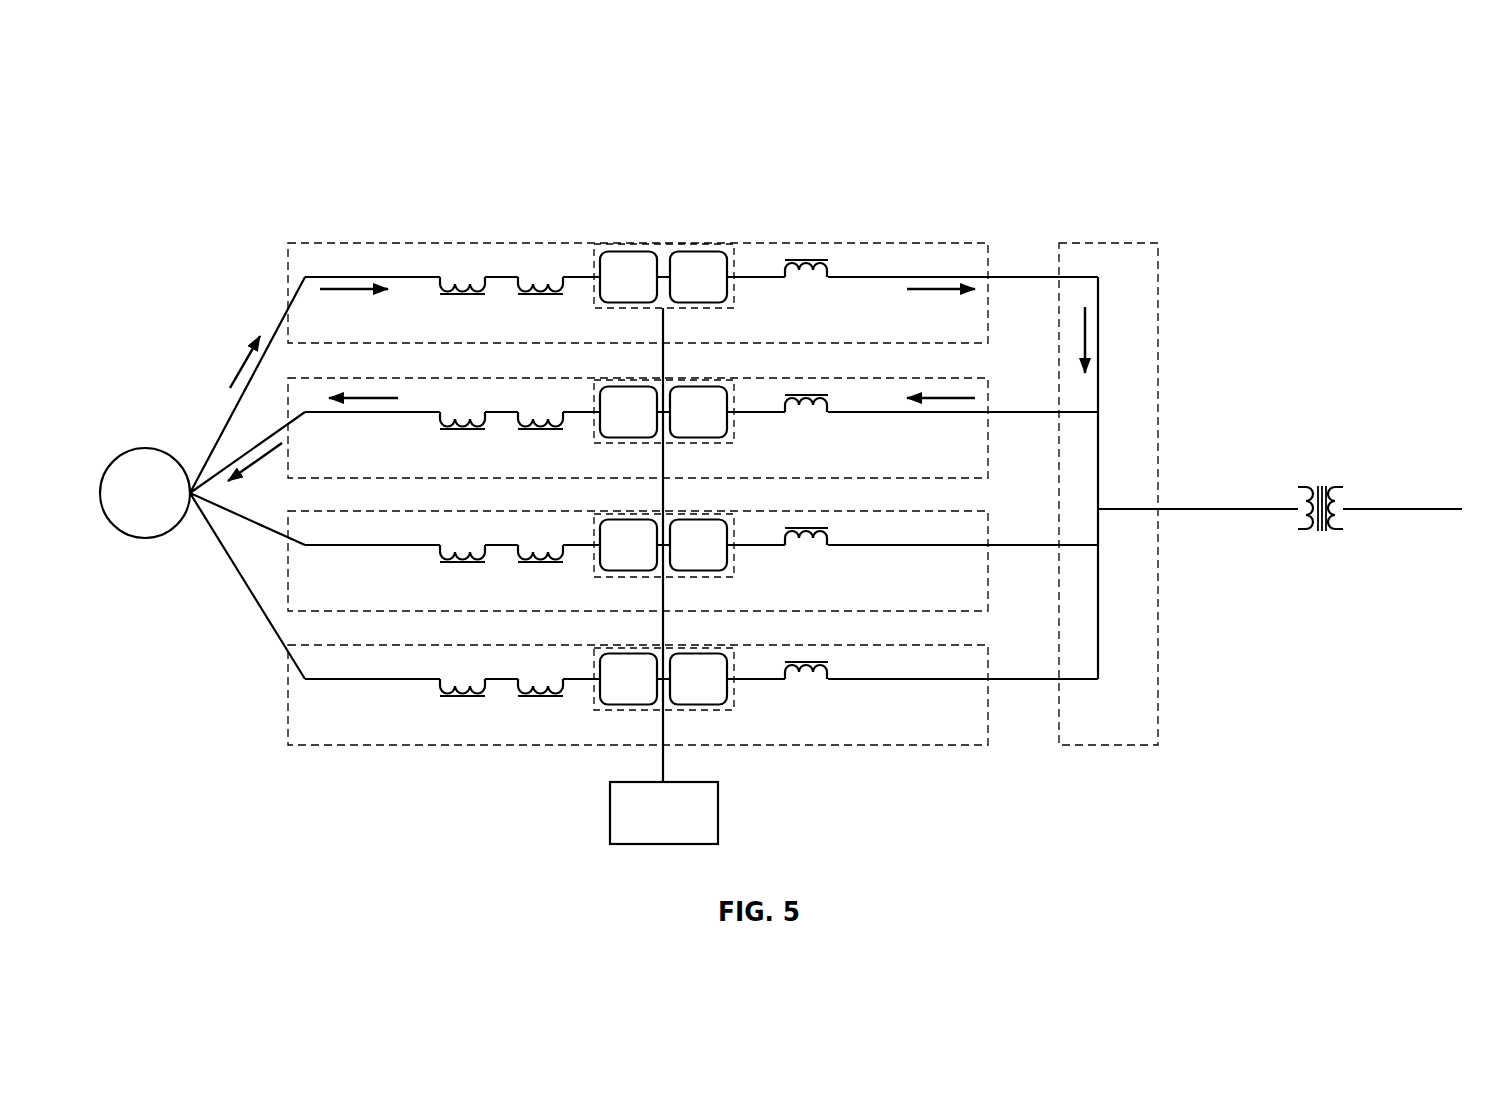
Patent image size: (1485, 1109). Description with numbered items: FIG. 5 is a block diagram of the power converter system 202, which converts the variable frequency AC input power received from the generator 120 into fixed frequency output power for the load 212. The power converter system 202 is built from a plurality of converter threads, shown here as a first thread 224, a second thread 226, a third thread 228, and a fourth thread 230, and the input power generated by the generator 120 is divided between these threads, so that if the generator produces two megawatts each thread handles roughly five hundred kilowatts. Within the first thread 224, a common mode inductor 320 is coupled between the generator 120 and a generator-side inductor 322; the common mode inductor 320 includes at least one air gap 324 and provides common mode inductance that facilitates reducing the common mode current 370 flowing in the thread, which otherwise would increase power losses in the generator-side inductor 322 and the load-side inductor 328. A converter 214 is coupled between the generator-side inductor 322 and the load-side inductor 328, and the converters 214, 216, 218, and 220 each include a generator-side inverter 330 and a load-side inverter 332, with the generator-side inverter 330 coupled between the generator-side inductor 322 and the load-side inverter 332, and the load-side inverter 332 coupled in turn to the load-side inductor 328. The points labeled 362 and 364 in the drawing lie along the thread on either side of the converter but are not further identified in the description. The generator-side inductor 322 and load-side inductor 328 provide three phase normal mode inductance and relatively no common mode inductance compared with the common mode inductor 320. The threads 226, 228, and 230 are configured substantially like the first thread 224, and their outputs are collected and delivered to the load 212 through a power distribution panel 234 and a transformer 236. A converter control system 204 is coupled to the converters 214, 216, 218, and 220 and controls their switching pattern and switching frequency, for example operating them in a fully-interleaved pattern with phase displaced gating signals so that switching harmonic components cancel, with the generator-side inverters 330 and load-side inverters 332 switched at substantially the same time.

The generator 120 is at (145, 538).
The power converter system 202 is at (340, 226).
The converter control system 204 is at (718, 812).
The load 212 is at (1403, 509).
The converter 214 is at (706, 228).
The converter 216 is at (735, 427).
The converter 218 is at (735, 560).
The converter 220 is at (735, 694).
The first thread 224 is at (1005, 277).
The second thread 226 is at (1005, 412).
The third thread 228 is at (1005, 545).
The fourth thread 230 is at (1005, 679).
The power distribution panel 234 is at (1160, 268).
The transformer 236 is at (1302, 466).
The common mode inductor 320 is at (440, 283).
The generator-side inductor 322 is at (518, 285).
The air gap 324 is at (464, 272).
The load-side inductor 328 is at (830, 268).
The generator-side inverter 330 is at (627, 225).
The load-side inverter 332 is at (711, 225).
The first node 362 is at (580, 280).
The second node 364 is at (752, 278).
The common mode current 370 is at (243, 366).